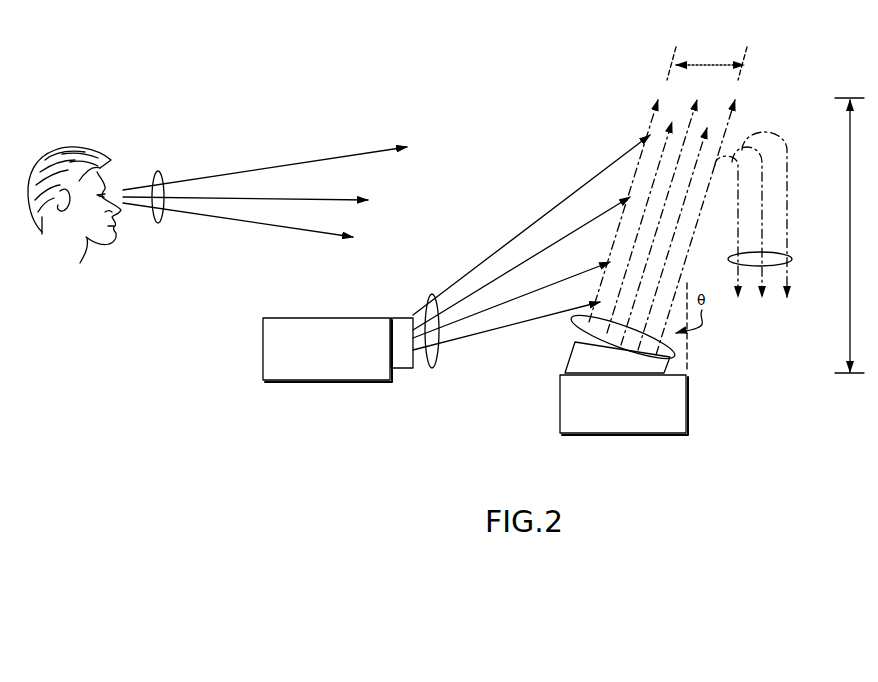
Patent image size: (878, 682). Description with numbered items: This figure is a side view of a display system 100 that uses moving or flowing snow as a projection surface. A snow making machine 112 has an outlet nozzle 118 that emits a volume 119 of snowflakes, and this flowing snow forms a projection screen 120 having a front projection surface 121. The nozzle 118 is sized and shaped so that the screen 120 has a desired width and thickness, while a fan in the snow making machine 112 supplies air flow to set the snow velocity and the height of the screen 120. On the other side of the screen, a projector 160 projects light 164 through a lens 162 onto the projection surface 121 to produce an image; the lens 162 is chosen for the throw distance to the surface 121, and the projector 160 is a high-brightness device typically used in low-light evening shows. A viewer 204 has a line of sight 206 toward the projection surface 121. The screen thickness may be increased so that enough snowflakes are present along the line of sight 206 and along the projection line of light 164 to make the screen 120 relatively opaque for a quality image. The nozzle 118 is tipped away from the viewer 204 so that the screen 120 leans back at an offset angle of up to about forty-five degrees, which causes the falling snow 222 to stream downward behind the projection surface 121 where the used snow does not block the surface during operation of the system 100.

The display system 100 is at (702, 488).
The snow making machine 112 is at (688, 419).
The outlet nozzle 118 is at (667, 370).
The snow volume 119 is at (677, 349).
The projection screen 120 is at (713, 198).
The projection surface 121 is at (636, 184).
The projector 160 is at (305, 381).
The lens 162 is at (405, 369).
The light 164 is at (436, 369).
The viewer 204 is at (63, 149).
The line of sight 206 is at (158, 172).
The falling snow 222 is at (789, 263).